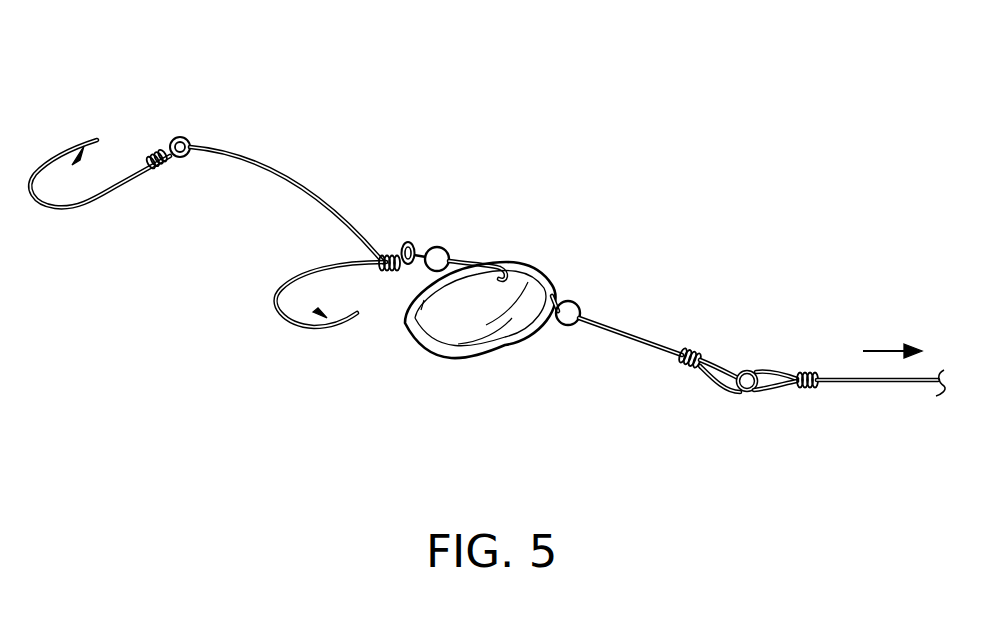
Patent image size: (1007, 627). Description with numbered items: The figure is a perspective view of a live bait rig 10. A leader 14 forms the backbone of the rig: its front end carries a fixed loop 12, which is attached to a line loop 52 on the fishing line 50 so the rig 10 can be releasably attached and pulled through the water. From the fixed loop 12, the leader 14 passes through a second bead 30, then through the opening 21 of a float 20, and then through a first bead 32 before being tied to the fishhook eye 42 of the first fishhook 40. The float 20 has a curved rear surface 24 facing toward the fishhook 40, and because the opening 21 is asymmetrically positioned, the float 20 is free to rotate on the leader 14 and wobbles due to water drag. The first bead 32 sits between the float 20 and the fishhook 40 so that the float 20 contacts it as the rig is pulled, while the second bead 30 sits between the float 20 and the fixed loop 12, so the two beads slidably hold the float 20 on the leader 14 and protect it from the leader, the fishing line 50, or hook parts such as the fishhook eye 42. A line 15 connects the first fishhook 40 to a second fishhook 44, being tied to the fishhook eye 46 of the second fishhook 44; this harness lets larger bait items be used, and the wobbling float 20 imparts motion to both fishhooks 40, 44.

The live bait rig 10 is at (592, 78).
The fixed loop 12 is at (730, 395).
The leader 14 is at (645, 350).
The line 15 is at (282, 173).
The float 20 is at (535, 258).
The opening 21 is at (503, 272).
The curved rear surface 24 is at (400, 308).
The second bead 30 is at (573, 300).
The first bead 32 is at (437, 246).
The first fishhook 40 is at (287, 322).
The fishhook eye 42 is at (407, 240).
The second fishhook 44 is at (118, 207).
The fishhook eye 46 is at (178, 135).
The fishing line 50 is at (893, 384).
The line loop 52 is at (772, 393).